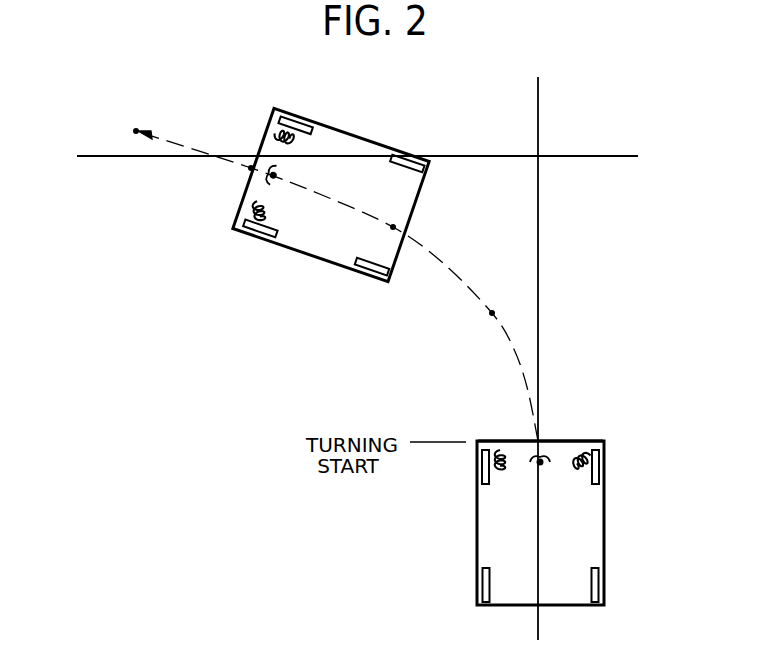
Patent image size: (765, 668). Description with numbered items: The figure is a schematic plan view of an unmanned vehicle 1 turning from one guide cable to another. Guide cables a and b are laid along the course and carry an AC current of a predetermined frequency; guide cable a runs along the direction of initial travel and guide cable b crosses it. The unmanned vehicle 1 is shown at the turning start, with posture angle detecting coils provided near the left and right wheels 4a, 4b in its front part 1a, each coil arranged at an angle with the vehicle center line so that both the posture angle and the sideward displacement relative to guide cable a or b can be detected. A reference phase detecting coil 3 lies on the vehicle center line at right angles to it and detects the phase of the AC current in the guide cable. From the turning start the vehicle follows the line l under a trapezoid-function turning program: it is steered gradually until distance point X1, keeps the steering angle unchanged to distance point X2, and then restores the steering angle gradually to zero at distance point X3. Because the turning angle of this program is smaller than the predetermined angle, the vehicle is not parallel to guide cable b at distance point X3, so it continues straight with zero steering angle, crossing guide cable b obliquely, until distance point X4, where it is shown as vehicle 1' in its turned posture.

The unmanned vehicle 1 is at (564, 523).
The unmanned vehicle after turning 1' is at (331, 186).
The front part of the unmanned vehicle 1a is at (558, 441).
The reference phase detecting coil 3 is at (544, 464).
The left wheel 4a is at (480, 470).
The right wheel 4b is at (603, 468).
The guide cable a is at (539, 100).
The guide cable b is at (607, 155).
The line of travel l is at (516, 352).
The distance point X1 is at (497, 300).
The distance point X2 is at (392, 213).
The distance point X3 is at (237, 179).
The distance point X4 is at (145, 119).